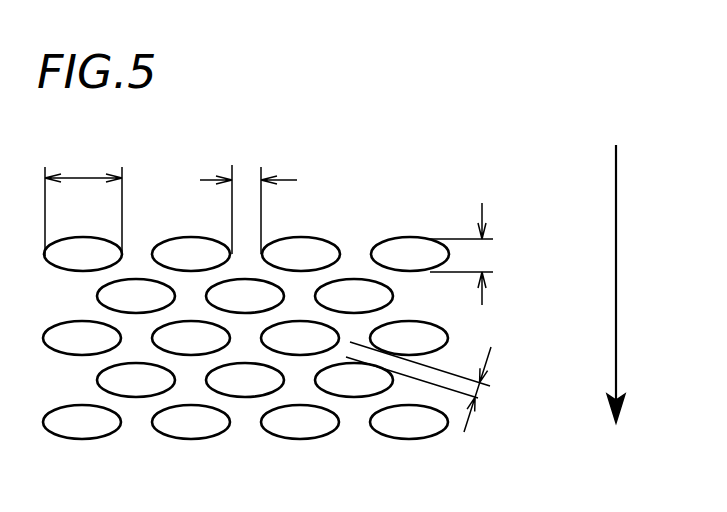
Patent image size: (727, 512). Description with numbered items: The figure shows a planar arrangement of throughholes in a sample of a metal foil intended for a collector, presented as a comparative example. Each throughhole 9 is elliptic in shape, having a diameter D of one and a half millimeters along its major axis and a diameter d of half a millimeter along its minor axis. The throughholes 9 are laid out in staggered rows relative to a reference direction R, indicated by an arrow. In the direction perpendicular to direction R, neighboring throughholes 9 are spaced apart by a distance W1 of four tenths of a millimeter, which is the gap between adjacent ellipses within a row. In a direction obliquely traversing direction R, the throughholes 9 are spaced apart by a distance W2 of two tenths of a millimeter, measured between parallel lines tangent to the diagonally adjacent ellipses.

The throughhole 9 is at (173, 243).
The major-axis diameter D is at (83, 198).
The throughhole spacing perpendicular to direction R W1 is at (248, 194).
The minor-axis diameter d is at (467, 254).
The throughhole spacing obliquely traversing direction R W2 is at (442, 387).
The direction R is at (616, 304).